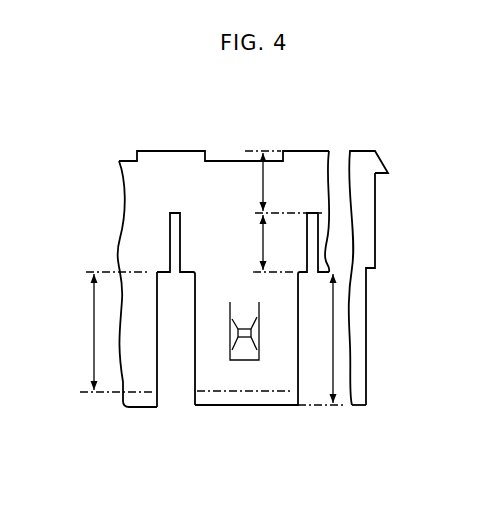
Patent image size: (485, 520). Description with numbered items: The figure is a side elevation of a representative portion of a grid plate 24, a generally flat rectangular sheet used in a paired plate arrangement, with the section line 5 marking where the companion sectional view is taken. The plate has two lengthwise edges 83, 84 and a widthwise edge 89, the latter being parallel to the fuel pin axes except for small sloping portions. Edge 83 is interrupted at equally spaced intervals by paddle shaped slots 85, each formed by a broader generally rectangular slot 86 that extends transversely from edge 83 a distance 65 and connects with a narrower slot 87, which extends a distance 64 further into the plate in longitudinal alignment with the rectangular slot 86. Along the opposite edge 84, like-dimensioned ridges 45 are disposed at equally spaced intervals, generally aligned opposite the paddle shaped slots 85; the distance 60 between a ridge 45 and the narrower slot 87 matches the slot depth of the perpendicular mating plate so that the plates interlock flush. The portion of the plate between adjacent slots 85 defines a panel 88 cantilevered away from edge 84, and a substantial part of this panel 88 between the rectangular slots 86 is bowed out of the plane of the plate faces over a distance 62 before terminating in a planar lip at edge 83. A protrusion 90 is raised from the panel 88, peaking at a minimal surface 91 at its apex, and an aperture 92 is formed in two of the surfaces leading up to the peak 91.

The section line 5- 5 is at (315, 131).
The grid plate 24 is at (115, 146).
The ridge 45 is at (181, 149).
The distance 60 is at (263, 183).
The distance 62 is at (94, 332).
The distance 64 is at (263, 239).
The distance 65 is at (335, 335).
The lengthwise edge 83 is at (358, 406).
The lengthwise edge 84 is at (375, 151).
The paddle shaped slot 85 is at (195, 271).
The rectangular slot 86 is at (157, 271).
The narrower slot 87 is at (170, 222).
The panel 88 is at (262, 301).
The widthwise edge 89 is at (375, 240).
The protrusion 90 is at (228, 350).
The minimal surface 91 is at (247, 338).
The aperture 92 is at (255, 328).